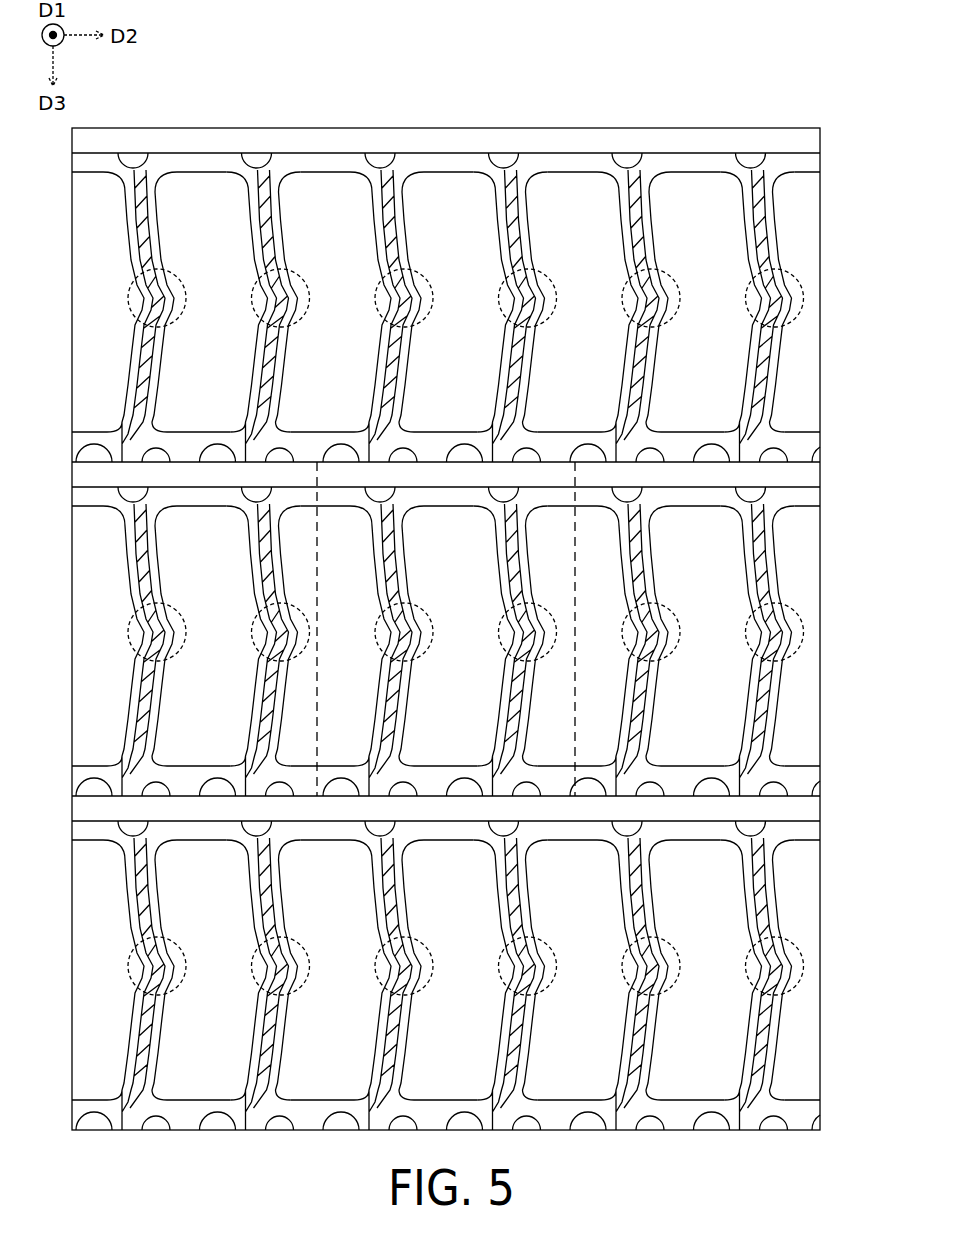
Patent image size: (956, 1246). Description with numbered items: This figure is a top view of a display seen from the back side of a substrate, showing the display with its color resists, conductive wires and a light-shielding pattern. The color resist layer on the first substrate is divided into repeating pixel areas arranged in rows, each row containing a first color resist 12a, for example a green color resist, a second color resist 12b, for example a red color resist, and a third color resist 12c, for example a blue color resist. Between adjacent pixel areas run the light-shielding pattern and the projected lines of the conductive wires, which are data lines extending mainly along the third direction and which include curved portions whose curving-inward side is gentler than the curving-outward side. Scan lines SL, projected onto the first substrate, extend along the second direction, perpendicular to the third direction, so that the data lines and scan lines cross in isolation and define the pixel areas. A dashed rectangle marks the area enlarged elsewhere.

The first color resist 12a is at (352, 365).
The second color resist 12b is at (122, 365).
The third color resist 12c is at (229, 365).
The sealing line SL is at (806, 143).